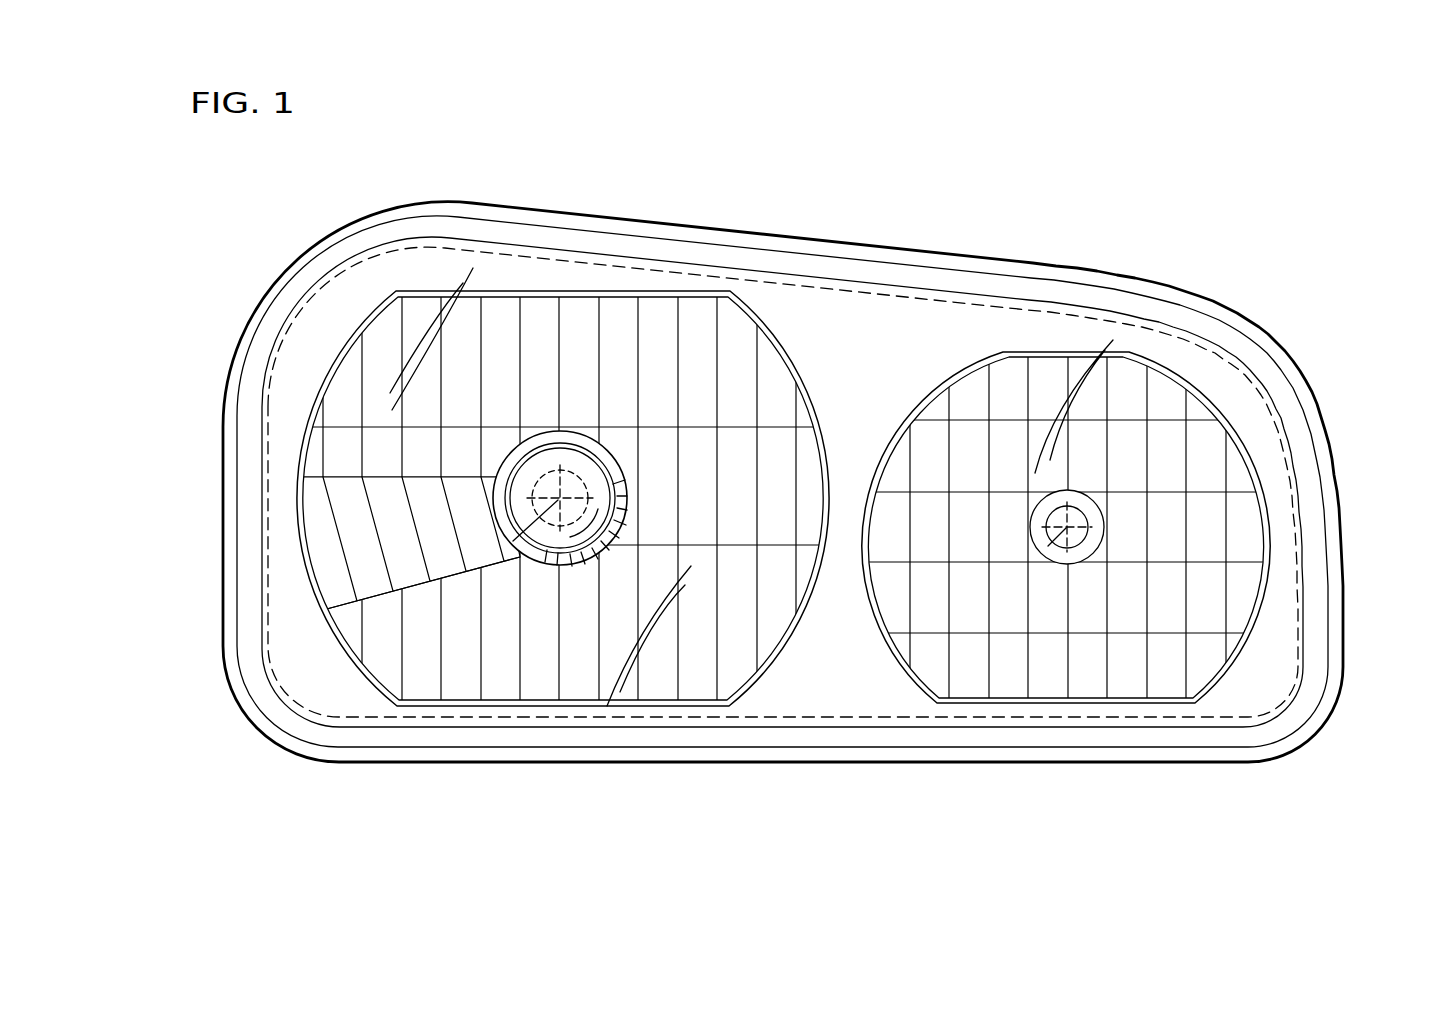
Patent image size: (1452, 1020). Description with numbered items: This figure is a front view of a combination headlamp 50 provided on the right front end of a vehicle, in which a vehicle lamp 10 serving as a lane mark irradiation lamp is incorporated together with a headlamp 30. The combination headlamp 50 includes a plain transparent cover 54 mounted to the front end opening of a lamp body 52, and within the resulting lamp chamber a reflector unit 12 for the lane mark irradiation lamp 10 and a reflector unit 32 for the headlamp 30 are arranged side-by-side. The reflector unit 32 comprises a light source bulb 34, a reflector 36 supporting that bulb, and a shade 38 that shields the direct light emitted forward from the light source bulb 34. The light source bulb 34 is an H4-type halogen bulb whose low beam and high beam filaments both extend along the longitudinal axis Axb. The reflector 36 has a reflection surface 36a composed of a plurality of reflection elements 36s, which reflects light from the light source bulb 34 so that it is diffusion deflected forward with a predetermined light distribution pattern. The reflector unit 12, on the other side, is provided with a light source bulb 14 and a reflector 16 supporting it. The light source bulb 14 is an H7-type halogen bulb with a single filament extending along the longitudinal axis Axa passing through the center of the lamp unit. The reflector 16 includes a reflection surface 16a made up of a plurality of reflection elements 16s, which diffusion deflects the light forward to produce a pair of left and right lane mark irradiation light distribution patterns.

The combination headlamp 50 is at (788, 438).
The lamp body 52 is at (960, 252).
The plain transparent cover 54 is at (1021, 300).
The headlamp 30 is at (506, 438).
The reflector unit 32 is at (753, 308).
The light source bulb 34 is at (583, 484).
The reflector 36 is at (783, 347).
The reflection surface 36a is at (576, 325).
The reflection elements 36s is at (323, 447).
The shade 38 is at (548, 440).
The longitudinal axis Axb is at (513, 541).
The vehicle lamp 10 is at (1130, 475).
The reflector unit 12 is at (1257, 453).
The light source bulb 14 is at (1082, 513).
The reflector 16 is at (923, 398).
The reflection surface 16a is at (1200, 437).
The reflection elements 16s is at (1227, 603).
The longitudinal axis Axa is at (1048, 546).